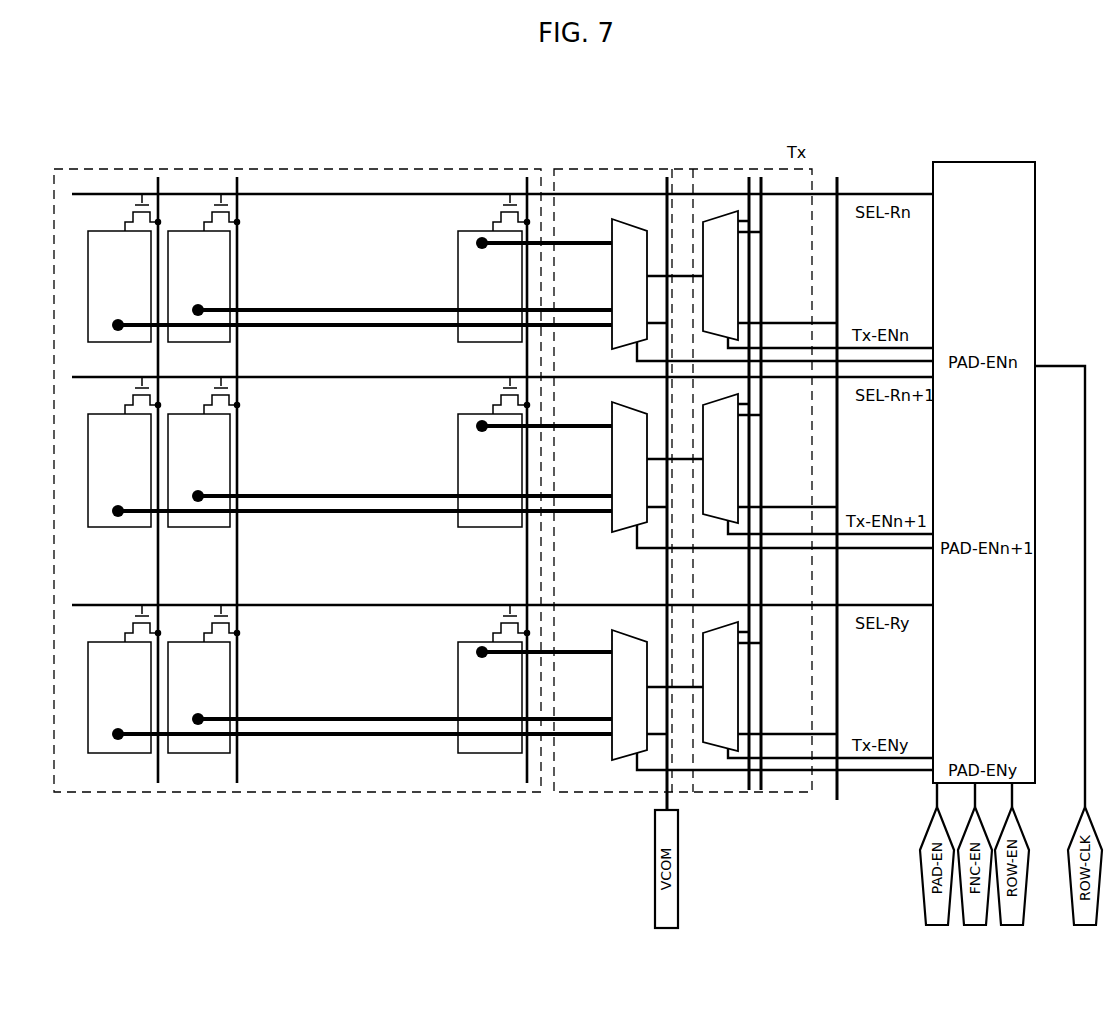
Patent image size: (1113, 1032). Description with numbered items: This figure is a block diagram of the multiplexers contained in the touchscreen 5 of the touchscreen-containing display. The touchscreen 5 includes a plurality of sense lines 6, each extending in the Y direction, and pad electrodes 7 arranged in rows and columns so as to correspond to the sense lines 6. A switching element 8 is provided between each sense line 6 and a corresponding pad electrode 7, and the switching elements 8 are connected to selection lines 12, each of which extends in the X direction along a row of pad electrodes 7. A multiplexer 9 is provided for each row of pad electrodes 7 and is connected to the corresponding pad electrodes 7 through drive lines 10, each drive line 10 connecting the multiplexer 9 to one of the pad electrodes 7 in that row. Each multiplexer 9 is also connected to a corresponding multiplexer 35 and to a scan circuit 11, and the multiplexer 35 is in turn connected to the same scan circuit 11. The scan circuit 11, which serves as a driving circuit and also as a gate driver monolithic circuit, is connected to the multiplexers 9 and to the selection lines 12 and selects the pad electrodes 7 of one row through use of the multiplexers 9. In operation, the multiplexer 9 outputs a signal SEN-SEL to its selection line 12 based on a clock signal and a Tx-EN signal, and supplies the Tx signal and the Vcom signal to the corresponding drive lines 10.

The touchscreen 5 is at (920, 127).
The sense line 6 is at (160, 770).
The pad electrode 7 is at (100, 250).
The switching element 8 is at (127, 215).
The multiplexer 9 is at (632, 218).
The drive line 10 is at (588, 243).
The scan circuit 11 is at (1022, 162).
The selection line 12 is at (366, 195).
The multiplexer 35 is at (712, 222).